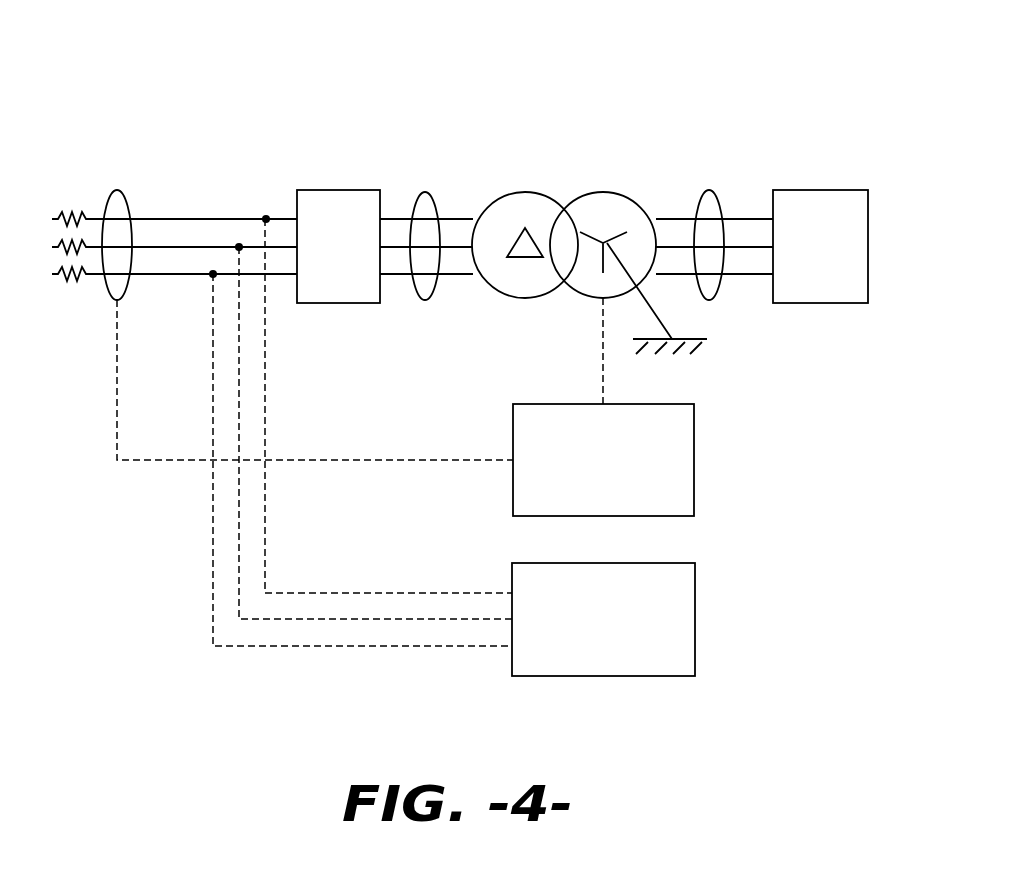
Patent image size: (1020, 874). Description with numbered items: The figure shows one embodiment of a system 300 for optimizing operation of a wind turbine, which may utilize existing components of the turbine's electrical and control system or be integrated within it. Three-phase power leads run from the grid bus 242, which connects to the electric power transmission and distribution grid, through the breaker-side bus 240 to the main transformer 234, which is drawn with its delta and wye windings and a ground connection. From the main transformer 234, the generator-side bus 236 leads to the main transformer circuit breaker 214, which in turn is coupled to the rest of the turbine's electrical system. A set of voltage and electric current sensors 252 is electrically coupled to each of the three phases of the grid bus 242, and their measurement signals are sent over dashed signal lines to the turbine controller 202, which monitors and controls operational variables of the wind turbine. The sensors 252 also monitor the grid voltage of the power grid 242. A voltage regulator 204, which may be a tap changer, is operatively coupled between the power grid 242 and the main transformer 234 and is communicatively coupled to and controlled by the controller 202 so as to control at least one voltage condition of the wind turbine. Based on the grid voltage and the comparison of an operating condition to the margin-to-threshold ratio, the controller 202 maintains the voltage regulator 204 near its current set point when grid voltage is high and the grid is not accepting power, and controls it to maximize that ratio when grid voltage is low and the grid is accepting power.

The system for optimizing wind turbine operation 300 is at (238, 78).
The grid bus 242 is at (117, 190).
The breaker-side bus 240 is at (425, 192).
The main transformer 234 is at (603, 192).
The generator-side bus 236 is at (709, 190).
The main transformer circuit breaker 214 is at (810, 190).
The voltage and electric current sensors 252 is at (197, 285).
The voltage regulator 204 is at (694, 462).
The turbine controller 202 is at (580, 636).